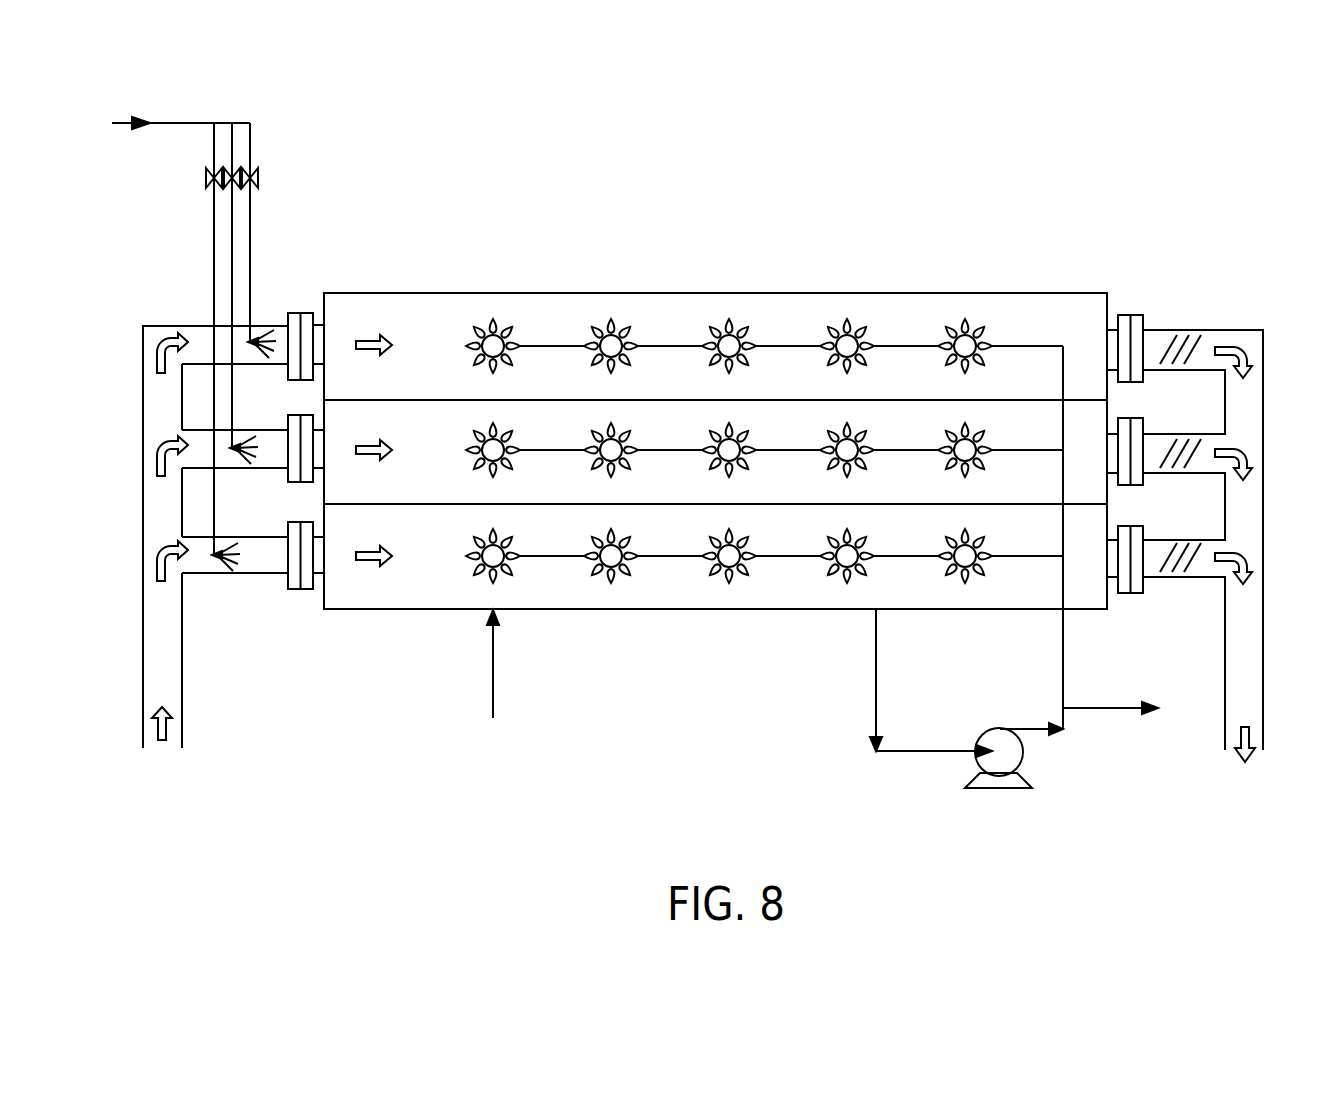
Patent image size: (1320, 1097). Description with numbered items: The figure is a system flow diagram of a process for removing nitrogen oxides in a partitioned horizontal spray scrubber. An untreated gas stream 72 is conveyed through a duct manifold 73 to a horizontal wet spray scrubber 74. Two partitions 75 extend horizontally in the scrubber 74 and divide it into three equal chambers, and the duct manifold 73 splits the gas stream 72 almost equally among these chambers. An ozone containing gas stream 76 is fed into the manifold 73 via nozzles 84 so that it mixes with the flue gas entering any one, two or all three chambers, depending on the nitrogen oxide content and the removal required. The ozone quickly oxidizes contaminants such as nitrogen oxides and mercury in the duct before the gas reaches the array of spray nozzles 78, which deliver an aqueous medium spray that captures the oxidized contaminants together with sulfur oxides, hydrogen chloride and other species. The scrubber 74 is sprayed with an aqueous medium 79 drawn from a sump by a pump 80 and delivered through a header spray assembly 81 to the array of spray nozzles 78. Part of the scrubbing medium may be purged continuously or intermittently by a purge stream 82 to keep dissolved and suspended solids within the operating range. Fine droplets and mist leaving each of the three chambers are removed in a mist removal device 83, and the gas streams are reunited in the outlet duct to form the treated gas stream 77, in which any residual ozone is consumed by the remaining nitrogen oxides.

The untreated gas stream 72 is at (162, 742).
The duct manifold 73 is at (157, 655).
The horizontal wet spray scrubber 74 is at (672, 333).
The partitions 75 is at (431, 399).
The ozone containing gas stream 76 is at (182, 123).
The treated gas stream 77 is at (1250, 758).
The array of spray nozzles 78 is at (853, 322).
The aqueous medium 79 is at (876, 653).
The pump 80 is at (1008, 805).
The header spray assembly 81 is at (1063, 636).
The purge stream 82 is at (1097, 708).
The mist removal device 83 is at (1190, 321).
The nozzles 84 is at (271, 329).